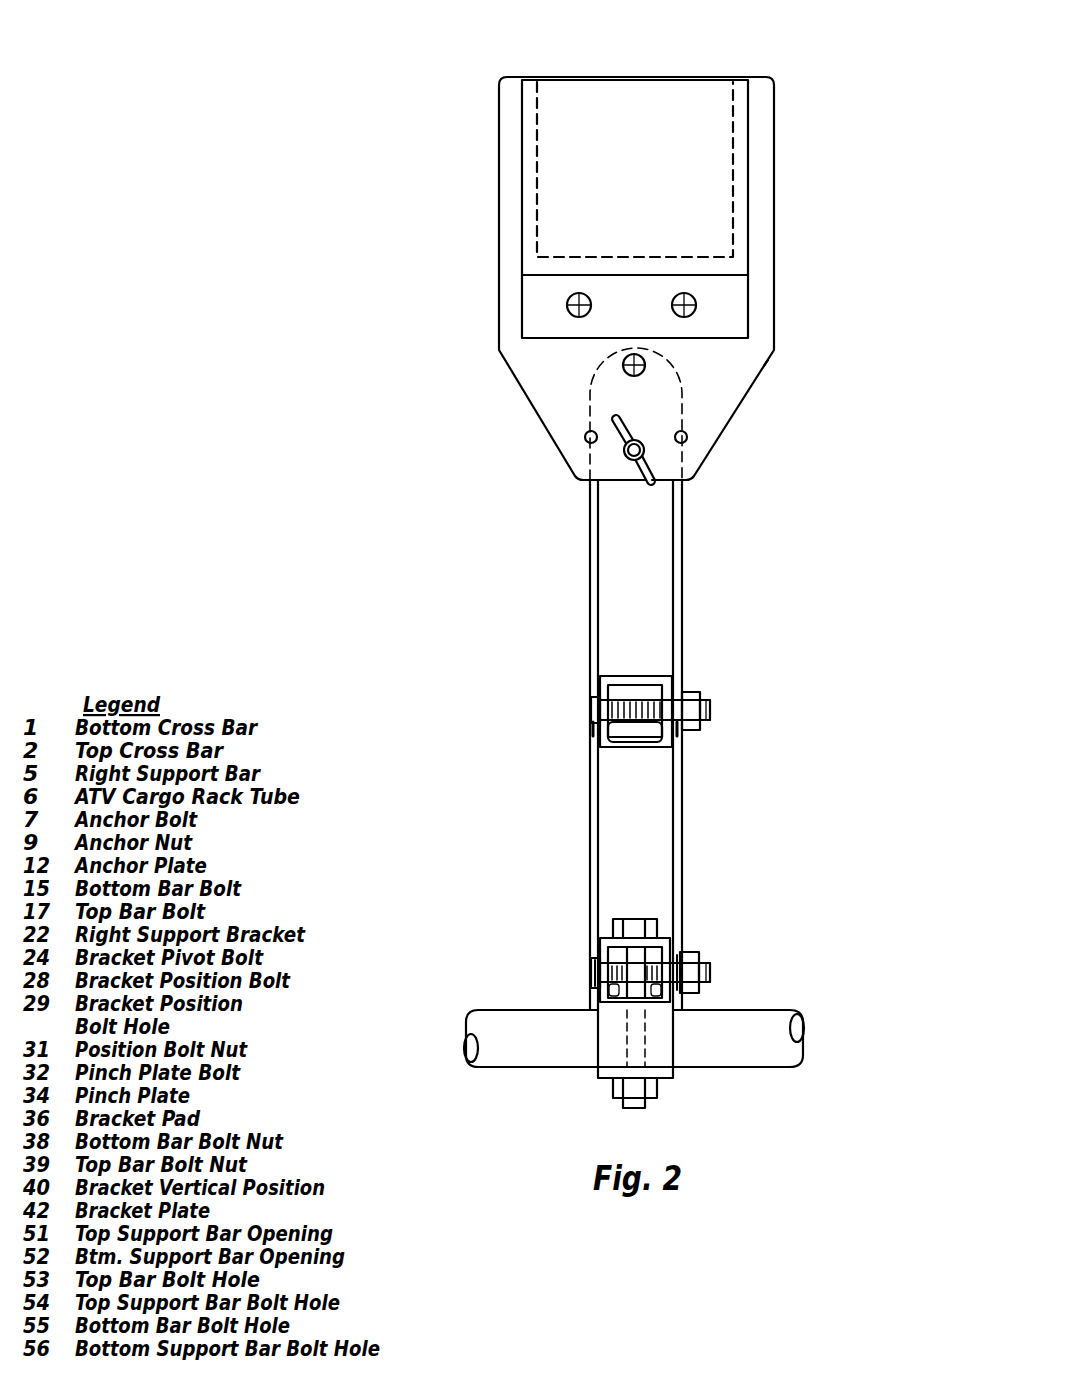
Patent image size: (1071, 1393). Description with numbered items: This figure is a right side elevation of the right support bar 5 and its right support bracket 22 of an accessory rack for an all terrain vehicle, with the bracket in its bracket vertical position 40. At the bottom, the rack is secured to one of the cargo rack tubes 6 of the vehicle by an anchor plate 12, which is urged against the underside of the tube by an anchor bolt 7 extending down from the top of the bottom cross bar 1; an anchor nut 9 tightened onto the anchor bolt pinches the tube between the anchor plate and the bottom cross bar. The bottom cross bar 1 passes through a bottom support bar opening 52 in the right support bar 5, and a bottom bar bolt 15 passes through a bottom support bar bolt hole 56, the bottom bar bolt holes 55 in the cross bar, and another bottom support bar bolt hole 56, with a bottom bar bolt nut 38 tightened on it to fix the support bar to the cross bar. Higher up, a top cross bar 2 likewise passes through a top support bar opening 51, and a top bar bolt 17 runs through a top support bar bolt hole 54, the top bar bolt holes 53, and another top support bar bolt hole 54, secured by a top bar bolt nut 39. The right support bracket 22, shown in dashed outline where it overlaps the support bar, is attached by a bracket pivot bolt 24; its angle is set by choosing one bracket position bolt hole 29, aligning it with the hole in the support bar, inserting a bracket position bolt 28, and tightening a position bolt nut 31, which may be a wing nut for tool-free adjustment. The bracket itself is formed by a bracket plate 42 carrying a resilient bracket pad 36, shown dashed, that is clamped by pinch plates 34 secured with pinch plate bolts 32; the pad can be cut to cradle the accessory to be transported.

The bottom cross bar 1 is at (655, 920).
The top cross bar 2 is at (660, 674).
The right support bar 5 is at (682, 557).
The cargo rack tubes 6 is at (755, 1068).
The anchor bolts 7 is at (636, 918).
The anchor nuts 9 is at (658, 1088).
The anchor plate 12 is at (597, 1075).
The bottom bar bolt 15 is at (590, 970).
The top bar bolt 17 is at (594, 712).
The right support bracket 22 is at (738, 412).
The bracket pivot bolt 24 is at (645, 365).
The bracket position bolt 28 is at (632, 461).
The bracket position bolt hole 29 is at (688, 437).
The position bolt nut 31 is at (657, 482).
The pinch plate bolts 32 is at (684, 293).
The pinch plates 34 is at (579, 293).
The bracket pad 36 is at (680, 102).
The bottom bar bolt nut 38 is at (700, 957).
The top bar bolt nut 39 is at (687, 687).
The bracket vertical position 40 is at (762, 372).
The bracket plate 42 is at (774, 235).
The top support bar opening 51 is at (590, 668).
The bottom support bar opening 52 is at (600, 985).
The top bar bolt holes 53 is at (654, 745).
The top support bar bolt hole 54 is at (593, 730).
The bottom bar bolt holes 55 is at (664, 986).
The bottom support bar bolt hole 56 is at (596, 960).